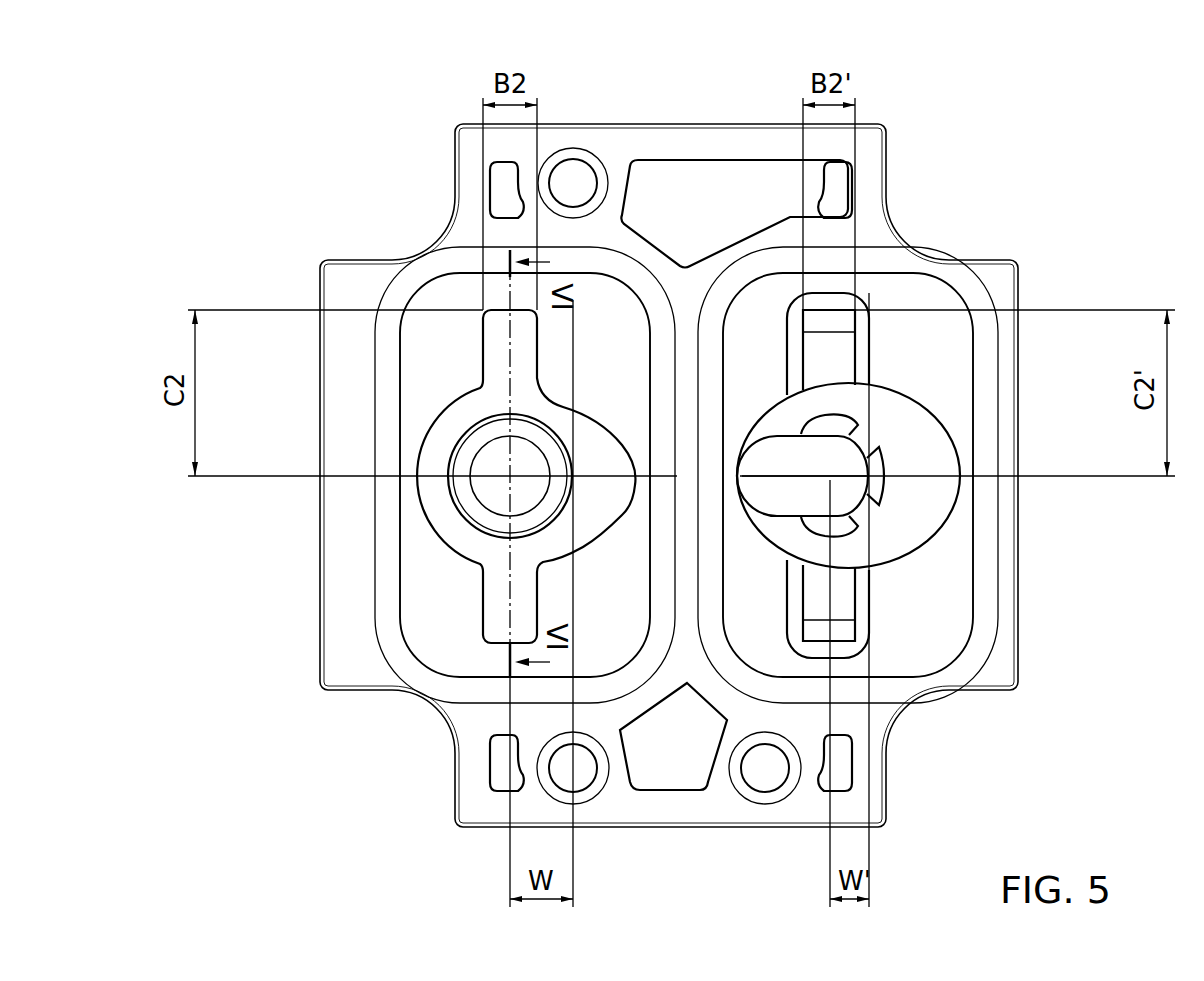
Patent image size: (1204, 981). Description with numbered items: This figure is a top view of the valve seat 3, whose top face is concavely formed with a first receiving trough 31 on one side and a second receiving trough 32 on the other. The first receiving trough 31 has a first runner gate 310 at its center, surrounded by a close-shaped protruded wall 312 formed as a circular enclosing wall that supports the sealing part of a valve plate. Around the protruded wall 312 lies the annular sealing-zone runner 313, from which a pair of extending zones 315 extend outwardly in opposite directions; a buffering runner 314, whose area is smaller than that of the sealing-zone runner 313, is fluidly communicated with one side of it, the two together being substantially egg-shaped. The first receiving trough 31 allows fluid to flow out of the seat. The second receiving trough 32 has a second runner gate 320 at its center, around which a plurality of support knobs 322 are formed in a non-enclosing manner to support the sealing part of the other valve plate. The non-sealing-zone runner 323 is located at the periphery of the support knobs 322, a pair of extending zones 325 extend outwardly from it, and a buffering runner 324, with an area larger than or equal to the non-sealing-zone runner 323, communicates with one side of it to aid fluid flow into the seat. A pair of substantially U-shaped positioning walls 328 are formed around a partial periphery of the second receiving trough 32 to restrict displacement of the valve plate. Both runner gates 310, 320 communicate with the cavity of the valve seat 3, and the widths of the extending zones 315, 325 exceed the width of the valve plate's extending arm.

The valve seat 3 is at (1032, 64).
The first receiving trough 31 is at (482, 590).
The first runner gate 310 is at (505, 480).
The protruded wall 312 is at (453, 443).
The sealing-zone runner 313 is at (457, 533).
The buffering runner 314 is at (598, 477).
The extending zones 315 is at (485, 333).
The second receiving trough 32 is at (908, 562).
The second runner gate 320 is at (845, 490).
The support knobs 322 is at (845, 422).
The non-sealing-zone runner 323 is at (778, 532).
The buffering runner 324 is at (940, 500).
The extending zones 325 is at (843, 322).
The positioning walls 328 is at (795, 313).